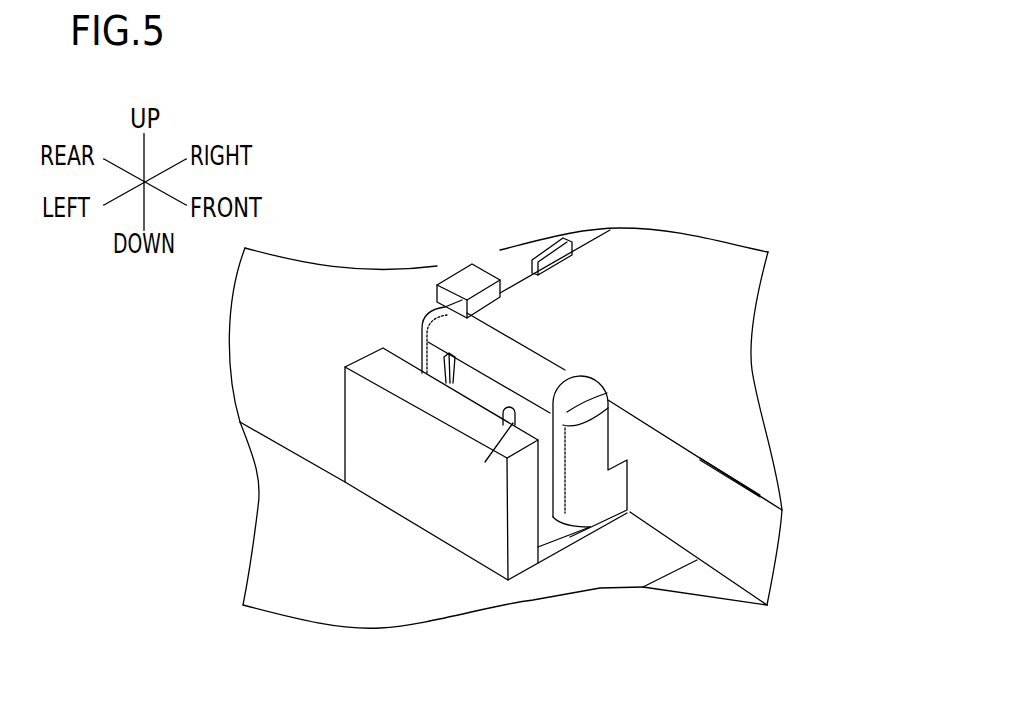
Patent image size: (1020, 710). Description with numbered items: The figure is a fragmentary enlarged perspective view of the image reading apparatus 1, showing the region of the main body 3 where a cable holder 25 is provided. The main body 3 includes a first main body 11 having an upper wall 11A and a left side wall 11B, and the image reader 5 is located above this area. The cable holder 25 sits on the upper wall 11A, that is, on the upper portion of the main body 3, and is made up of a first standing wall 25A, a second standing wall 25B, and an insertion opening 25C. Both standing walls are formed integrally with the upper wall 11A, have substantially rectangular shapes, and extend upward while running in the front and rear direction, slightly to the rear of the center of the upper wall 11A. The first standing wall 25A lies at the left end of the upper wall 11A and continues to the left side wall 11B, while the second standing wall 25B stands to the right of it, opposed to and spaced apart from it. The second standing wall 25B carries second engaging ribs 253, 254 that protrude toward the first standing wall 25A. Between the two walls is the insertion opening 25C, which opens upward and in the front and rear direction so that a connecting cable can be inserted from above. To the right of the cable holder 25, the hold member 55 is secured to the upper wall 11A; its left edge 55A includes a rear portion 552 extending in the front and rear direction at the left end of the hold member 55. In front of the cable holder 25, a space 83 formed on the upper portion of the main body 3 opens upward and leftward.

The image reading apparatus 1 is at (392, 222).
The main body 3 is at (272, 562).
The image reader 5 is at (673, 272).
The first main body 11 is at (243, 322).
The upper wall 11A is at (320, 307).
The left side wall 11B is at (398, 612).
The cable holder 25 is at (392, 366).
The first standing wall 25A is at (413, 388).
The second standing wall 25B is at (530, 363).
The insertion opening 25C is at (503, 425).
The second engaging rib 253 is at (572, 403).
The second engaging rib 254 is at (453, 362).
The hold member 55 is at (733, 373).
The rear portion 552 is at (763, 513).
The left edge 55A is at (790, 453).
The space 83 is at (633, 553).